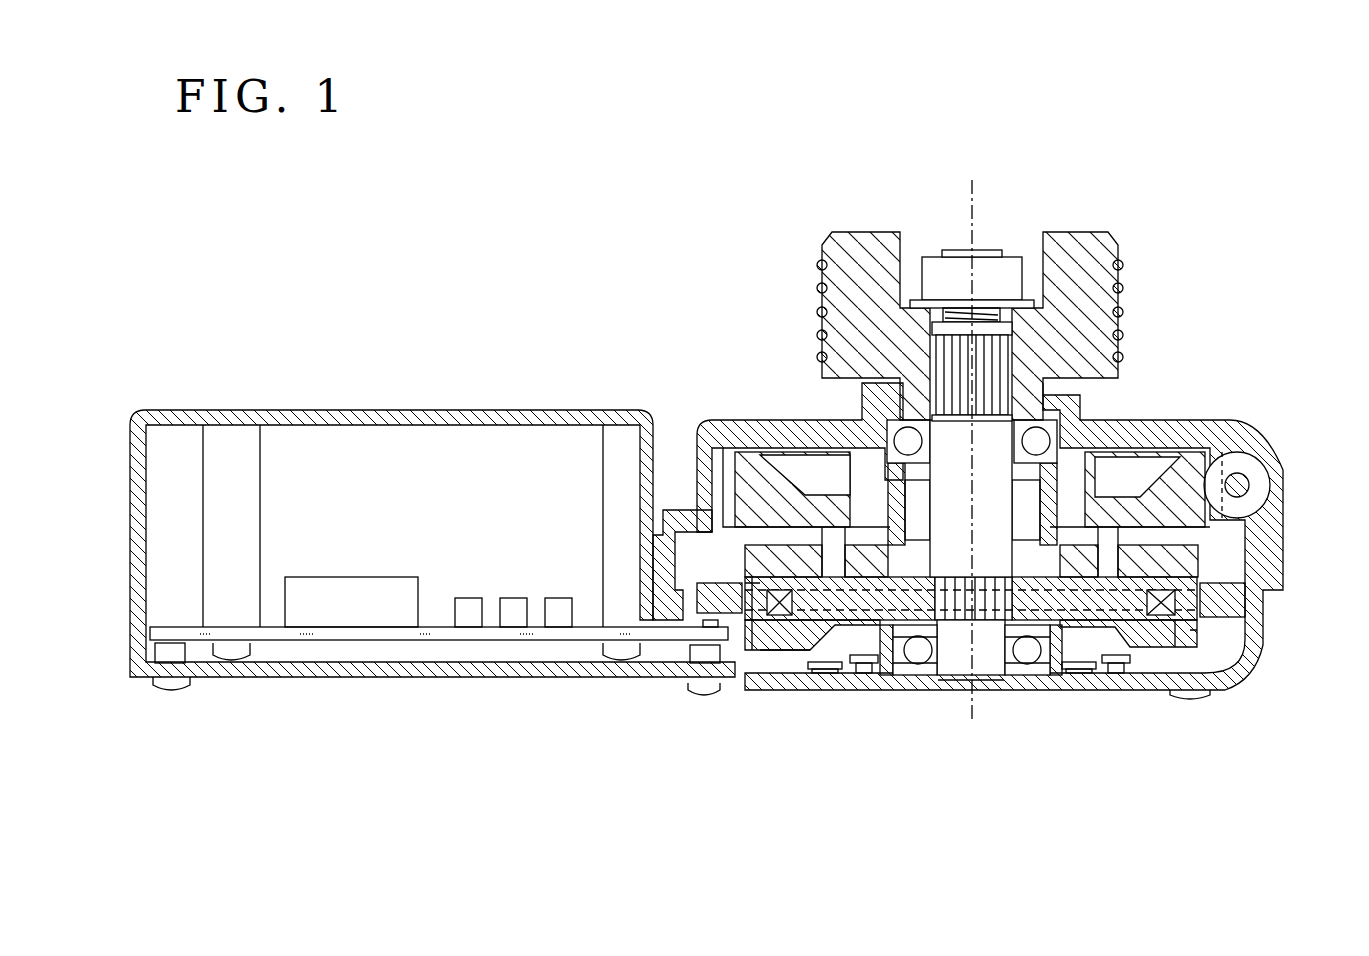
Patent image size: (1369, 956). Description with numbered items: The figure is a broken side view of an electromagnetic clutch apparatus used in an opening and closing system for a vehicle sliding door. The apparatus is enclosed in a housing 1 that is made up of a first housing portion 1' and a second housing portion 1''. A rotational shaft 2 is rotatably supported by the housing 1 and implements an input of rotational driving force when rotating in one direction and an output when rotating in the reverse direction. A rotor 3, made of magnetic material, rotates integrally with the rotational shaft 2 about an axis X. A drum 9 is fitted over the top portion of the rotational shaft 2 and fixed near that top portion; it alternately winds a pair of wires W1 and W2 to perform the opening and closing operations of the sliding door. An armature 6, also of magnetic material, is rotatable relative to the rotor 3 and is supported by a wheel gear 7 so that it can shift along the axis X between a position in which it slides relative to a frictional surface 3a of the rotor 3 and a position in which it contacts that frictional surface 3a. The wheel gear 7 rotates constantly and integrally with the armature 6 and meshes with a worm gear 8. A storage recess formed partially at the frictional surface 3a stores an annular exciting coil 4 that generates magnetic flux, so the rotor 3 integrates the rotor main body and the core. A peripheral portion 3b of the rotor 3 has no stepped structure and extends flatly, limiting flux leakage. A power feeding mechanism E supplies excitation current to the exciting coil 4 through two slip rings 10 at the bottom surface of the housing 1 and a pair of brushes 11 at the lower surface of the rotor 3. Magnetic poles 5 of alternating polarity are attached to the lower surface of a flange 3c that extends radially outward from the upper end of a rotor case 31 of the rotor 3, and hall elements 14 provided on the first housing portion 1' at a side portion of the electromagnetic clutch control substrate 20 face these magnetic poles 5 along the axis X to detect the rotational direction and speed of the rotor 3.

The housing 1 is at (432, 515).
The first housing portion 1' is at (990, 511).
The second housing portion 1'' is at (437, 494).
The rotational shaft 2 is at (975, 650).
The rotor 3 is at (790, 632).
The frictional surface 3a is at (945, 577).
The peripheral portion 3b is at (1200, 632).
The flange 3c is at (758, 590).
The rotor case 31 is at (772, 652).
The exciting coil 4 is at (778, 605).
The magnetic poles 5 is at (700, 598).
The armature 6 is at (715, 525).
The wheel gear 7 is at (1185, 458).
The worm gear 8 is at (1250, 478).
The drum 9 is at (1072, 250).
The slip rings 10 is at (825, 673).
The brushes 11 is at (860, 668).
The hall elements 14 is at (700, 626).
The electromagnetic clutch control substrate 20 is at (440, 640).
The power feeding mechanism E is at (878, 670).
The wire W1 is at (1128, 262).
The wire W2 is at (1128, 335).
The axis X is at (970, 435).